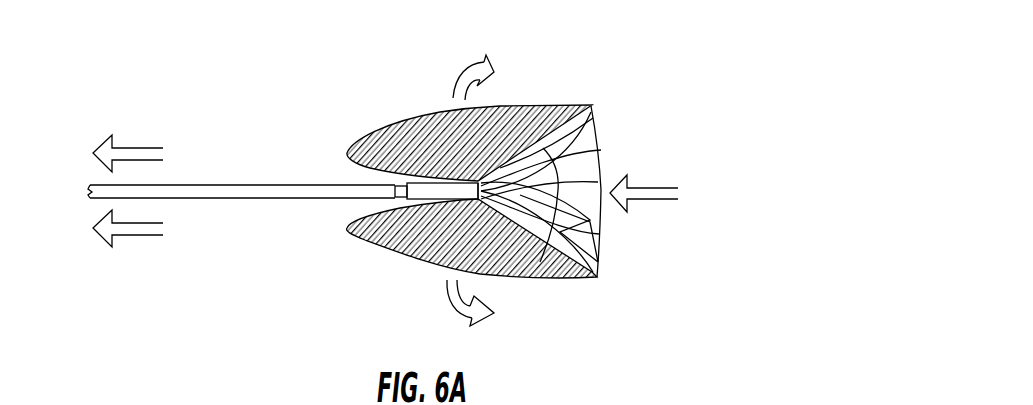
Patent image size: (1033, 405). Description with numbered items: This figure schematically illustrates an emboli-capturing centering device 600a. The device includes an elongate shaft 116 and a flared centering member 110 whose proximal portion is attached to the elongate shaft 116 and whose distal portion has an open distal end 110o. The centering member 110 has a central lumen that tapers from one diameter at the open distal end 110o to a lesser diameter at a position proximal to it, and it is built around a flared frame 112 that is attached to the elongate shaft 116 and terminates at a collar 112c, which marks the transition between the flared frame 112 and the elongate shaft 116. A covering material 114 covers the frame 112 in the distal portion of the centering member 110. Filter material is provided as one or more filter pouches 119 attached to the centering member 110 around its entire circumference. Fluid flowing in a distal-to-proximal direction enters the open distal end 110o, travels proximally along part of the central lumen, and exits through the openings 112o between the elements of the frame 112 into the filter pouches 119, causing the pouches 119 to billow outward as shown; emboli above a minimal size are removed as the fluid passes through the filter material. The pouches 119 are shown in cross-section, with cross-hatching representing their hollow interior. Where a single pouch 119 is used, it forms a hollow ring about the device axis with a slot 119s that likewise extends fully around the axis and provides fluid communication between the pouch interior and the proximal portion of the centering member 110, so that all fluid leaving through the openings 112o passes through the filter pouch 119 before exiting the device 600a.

The emboli-capturing centering device 600a is at (395, 168).
The elongate shaft 116 is at (295, 185).
The collar 112c is at (400, 185).
The flared frame 112 is at (577, 125).
The openings 112o is at (508, 168).
The filter pouches 119 is at (535, 107).
The flared centering member 110 is at (525, 199).
The covering material 114 is at (590, 153).
The open distal end 110o is at (603, 125).
The slot 119s is at (592, 263).